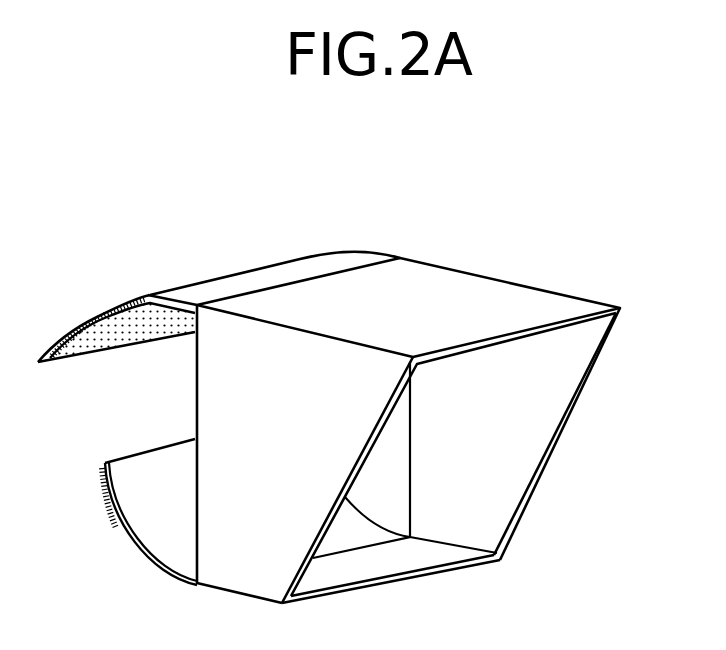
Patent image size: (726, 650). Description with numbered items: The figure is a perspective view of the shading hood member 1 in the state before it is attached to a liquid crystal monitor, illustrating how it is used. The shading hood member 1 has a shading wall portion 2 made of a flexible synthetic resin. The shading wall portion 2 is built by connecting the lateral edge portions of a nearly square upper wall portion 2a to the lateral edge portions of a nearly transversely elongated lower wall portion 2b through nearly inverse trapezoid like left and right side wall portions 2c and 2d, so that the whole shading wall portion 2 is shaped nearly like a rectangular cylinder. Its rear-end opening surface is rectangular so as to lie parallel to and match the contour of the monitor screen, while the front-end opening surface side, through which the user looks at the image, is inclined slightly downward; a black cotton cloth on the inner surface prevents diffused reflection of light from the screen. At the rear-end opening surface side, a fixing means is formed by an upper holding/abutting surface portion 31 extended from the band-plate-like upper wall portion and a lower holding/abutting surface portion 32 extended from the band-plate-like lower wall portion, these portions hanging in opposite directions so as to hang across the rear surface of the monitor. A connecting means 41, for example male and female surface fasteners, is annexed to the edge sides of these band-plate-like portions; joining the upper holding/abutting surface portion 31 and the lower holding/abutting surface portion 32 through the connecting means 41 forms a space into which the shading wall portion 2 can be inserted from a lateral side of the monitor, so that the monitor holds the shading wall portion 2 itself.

The shading hood member 1 is at (660, 261).
The shading wall portion 2 is at (424, 433).
The upper wall portion 2a is at (462, 283).
The lower wall portion 2b is at (370, 571).
The left side wall portion 2c is at (515, 446).
The right side wall portion 2d is at (265, 568).
The upper holding/abutting surface portion 31 is at (197, 285).
The lower holding/abutting surface portion 32 is at (158, 548).
The connecting means 41 is at (125, 335).